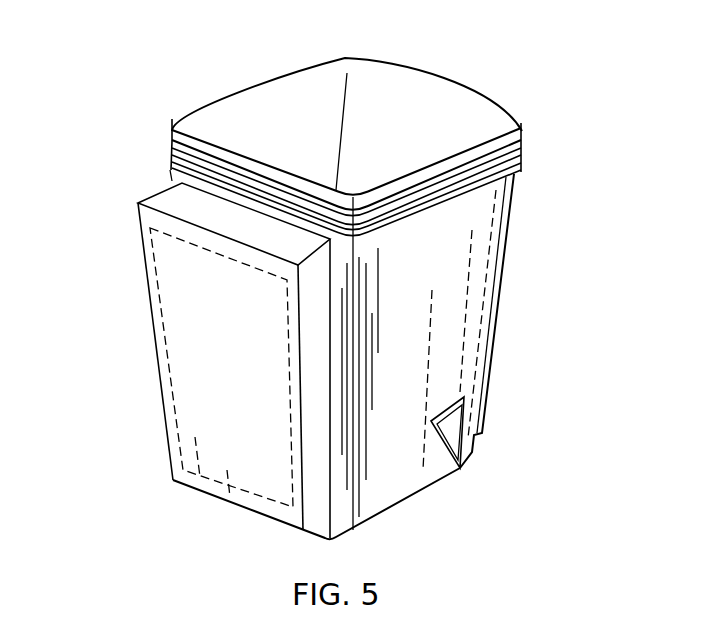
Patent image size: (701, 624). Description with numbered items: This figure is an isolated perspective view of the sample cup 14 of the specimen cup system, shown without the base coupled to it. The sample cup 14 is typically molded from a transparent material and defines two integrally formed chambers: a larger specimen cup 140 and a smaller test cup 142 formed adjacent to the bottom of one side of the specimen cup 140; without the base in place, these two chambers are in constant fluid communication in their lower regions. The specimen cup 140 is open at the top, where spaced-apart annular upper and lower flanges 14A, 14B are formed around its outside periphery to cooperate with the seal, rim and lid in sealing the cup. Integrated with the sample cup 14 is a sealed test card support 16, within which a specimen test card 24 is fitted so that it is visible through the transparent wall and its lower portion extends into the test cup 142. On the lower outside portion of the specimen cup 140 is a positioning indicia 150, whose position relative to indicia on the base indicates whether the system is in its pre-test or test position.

The sample cup 14 is at (527, 72).
The upper flange 14A is at (168, 143).
The lower flange 14B is at (166, 164).
The sealed test card support 16 is at (160, 385).
The specimen test card 24 is at (163, 328).
The specimen cup 140 is at (500, 302).
The test cup 142 is at (272, 508).
The positioning indicia 150 is at (458, 447).